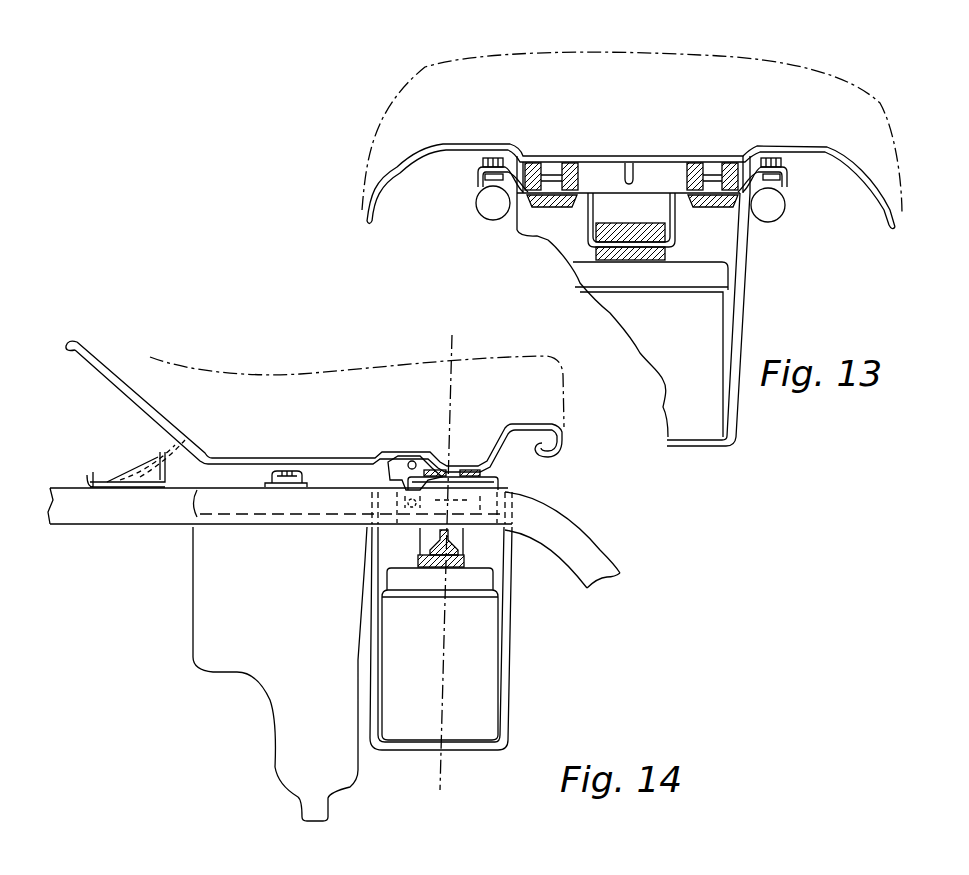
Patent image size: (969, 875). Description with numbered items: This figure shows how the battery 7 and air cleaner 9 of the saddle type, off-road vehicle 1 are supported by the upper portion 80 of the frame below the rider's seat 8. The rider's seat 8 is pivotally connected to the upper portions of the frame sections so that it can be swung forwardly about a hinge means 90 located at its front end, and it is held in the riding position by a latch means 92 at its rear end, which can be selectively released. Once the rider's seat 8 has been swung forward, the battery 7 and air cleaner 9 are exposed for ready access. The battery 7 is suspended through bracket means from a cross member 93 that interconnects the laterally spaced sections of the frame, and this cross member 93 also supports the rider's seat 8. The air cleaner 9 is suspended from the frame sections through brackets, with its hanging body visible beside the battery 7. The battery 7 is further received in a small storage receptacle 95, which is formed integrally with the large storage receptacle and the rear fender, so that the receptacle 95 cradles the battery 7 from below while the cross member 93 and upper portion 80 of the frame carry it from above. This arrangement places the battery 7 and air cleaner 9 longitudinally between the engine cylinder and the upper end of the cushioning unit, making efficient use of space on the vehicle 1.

In FIG. 13, the rider's seat 8 is at (390, 130).
In FIG. 13, the cross member 93 is at (640, 193).
In FIG. 13, the upper portion of frame section 80 is at (772, 208).
In FIG. 13, the off-road vehicle 1 is at (688, 359).
In FIG. 13, the small storage receptacle 95 is at (702, 446).
In FIG. 14, the small storage receptacle 95 is at (508, 666).
In FIG. 14, the latch means 92 is at (400, 468).
In FIG. 14, the hinge means 90 is at (140, 477).
In FIG. 14, the air cleaner 9 is at (300, 631).
In FIG. 14, the battery 7 is at (468, 678).